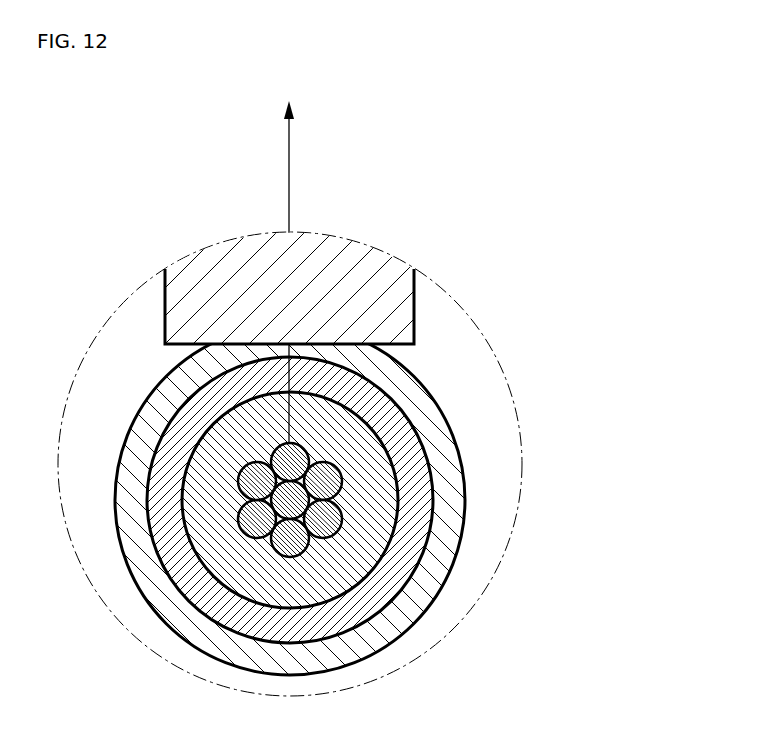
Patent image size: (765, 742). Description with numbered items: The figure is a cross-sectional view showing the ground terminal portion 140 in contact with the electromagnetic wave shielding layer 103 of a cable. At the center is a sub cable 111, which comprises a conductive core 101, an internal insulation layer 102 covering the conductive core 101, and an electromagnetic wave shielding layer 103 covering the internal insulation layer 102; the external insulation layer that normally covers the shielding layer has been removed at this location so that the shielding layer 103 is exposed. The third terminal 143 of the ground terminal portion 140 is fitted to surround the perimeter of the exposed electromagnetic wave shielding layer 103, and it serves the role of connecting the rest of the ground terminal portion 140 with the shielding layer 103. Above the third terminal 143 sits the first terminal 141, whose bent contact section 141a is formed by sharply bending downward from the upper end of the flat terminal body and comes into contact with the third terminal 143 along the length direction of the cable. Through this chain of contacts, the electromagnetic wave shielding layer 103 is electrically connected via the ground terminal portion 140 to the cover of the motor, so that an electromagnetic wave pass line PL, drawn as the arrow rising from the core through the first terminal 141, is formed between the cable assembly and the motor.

The conductive core 101 is at (325, 528).
The internal insulation layer 102 is at (380, 518).
The electromagnetic wave shielding layer 103 is at (423, 499).
The sub cable 111 is at (400, 508).
The ground terminal portion 140 is at (401, 453).
The first terminal 141 is at (391, 288).
The bent contact section 141a is at (398, 297).
The third terminal 143 is at (417, 387).
The electromagnetic wave pass line PL is at (289, 176).